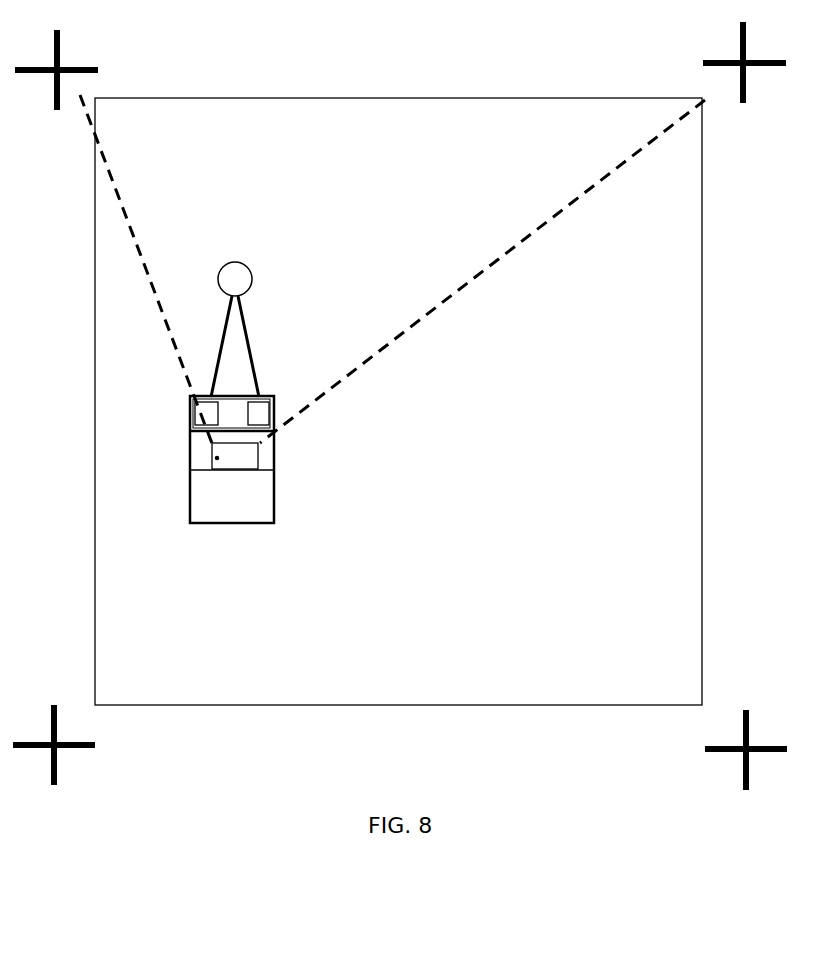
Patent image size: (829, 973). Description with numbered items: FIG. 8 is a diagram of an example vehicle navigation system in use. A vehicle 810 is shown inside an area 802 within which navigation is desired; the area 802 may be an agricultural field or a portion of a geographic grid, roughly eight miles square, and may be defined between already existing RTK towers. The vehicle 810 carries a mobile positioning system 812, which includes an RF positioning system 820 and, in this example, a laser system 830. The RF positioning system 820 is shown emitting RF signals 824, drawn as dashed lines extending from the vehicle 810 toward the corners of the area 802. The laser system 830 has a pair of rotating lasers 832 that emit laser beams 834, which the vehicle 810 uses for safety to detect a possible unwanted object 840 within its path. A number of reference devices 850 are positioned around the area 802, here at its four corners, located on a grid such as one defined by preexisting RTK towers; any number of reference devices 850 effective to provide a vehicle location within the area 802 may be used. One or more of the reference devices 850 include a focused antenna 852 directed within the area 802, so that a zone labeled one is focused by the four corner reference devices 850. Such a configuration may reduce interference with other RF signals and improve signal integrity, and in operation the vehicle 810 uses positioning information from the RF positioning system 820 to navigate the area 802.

The area 802 is at (398, 401).
The vehicle 810 is at (202, 499).
The mobile positioning system 812 is at (265, 457).
The RF positioning system 820 is at (238, 462).
The RF signals 824 is at (160, 313).
The laser system 830 is at (233, 418).
The rotating laser 832 is at (250, 420).
The laser beams 834 is at (248, 340).
The unwanted object 840 is at (233, 275).
The reference device 850 is at (92, 789).
The focused antenna 852 is at (83, 722).